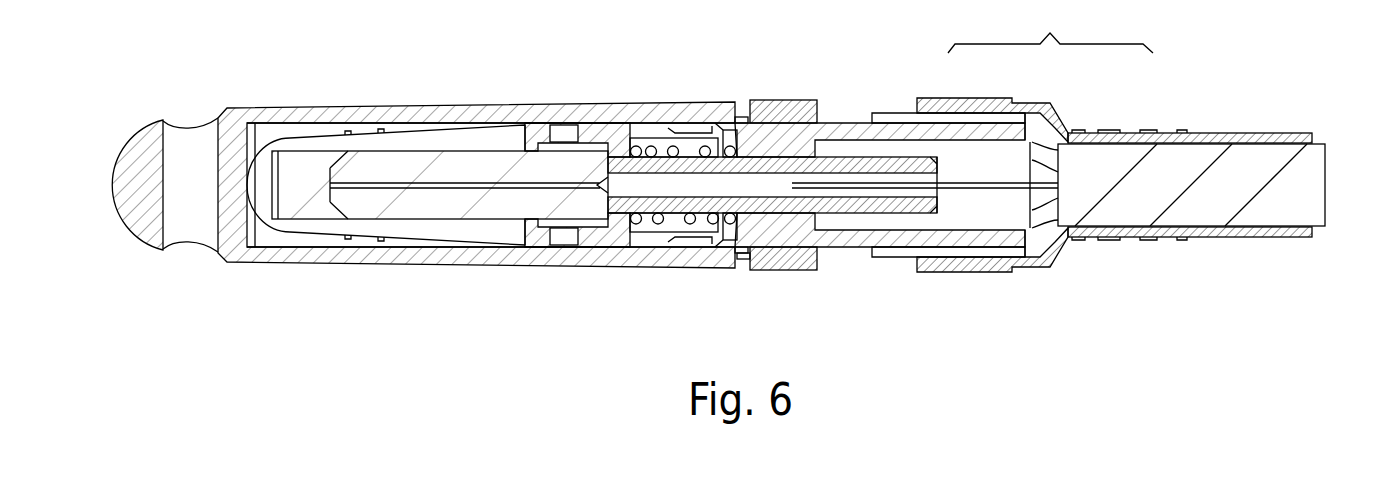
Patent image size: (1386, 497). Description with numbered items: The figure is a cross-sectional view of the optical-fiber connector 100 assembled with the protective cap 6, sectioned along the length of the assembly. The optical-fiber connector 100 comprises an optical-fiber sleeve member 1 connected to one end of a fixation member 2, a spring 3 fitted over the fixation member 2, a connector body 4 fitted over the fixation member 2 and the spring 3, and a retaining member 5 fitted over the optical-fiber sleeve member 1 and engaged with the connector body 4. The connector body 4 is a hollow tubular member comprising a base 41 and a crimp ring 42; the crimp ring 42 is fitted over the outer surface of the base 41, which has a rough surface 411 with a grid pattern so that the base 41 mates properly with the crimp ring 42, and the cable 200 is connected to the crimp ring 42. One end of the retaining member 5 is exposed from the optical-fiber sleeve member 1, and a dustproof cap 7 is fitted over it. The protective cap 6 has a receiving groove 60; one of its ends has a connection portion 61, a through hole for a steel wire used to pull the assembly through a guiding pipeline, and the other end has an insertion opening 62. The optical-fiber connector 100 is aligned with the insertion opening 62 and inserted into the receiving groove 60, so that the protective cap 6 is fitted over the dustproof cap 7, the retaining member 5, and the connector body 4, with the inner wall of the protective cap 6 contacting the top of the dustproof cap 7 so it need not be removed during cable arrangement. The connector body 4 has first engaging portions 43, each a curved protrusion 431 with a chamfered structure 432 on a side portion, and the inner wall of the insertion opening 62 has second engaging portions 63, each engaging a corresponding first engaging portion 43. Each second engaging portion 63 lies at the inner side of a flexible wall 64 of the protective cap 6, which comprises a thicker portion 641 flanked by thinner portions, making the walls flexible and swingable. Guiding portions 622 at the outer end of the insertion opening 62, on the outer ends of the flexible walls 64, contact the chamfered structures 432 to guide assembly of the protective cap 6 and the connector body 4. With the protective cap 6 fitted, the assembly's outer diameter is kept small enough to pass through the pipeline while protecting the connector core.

The optical-fiber connector 100 is at (1196, 336).
The optical-fiber sleeve member 1 is at (478, 166).
The fixation member 2 is at (675, 168).
The spring 3 is at (658, 224).
The connector body 4 is at (1050, 128).
The base 41 is at (967, 136).
The rough surface 411 is at (968, 244).
The crimp ring 42 is at (1113, 134).
The first engaging portion 43 is at (741, 119).
The curved protrusion 431 is at (737, 119).
The chamfered structure 432 is at (735, 253).
The retaining member 5 is at (593, 137).
The protective cap 6 is at (330, 255).
The receiving groove 60 is at (300, 130).
The connection portion 61 is at (185, 148).
The insertion opening 62 is at (818, 124).
The guiding portion 622 is at (818, 250).
The second engaging portion 63 is at (744, 260).
The flexible wall 64 is at (794, 110).
The thicker portion 641 is at (790, 262).
The dustproof cap 7 is at (420, 232).
The cable 200 is at (1267, 180).